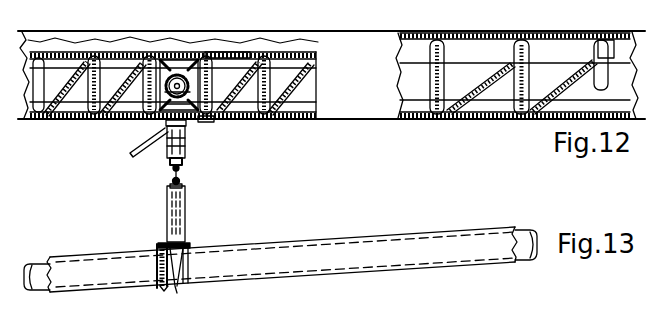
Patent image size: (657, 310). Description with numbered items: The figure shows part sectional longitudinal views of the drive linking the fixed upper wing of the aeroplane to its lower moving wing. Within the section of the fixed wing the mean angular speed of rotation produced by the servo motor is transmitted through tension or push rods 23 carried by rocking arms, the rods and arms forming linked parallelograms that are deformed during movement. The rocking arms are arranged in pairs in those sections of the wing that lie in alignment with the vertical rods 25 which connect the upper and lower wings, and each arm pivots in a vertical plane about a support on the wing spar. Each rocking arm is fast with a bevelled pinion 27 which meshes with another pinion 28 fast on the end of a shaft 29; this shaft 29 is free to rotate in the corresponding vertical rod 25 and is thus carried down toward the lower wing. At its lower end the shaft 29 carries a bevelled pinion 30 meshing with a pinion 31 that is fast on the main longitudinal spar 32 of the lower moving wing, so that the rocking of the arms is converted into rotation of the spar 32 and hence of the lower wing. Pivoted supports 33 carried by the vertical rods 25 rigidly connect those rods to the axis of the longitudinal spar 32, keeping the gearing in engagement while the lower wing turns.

In FIG. 12, the tension or push rod 23 is at (60, 63).
In FIG. 12, the vertical rod 25 is at (188, 149).
In FIG. 13, the vertical rod 25 is at (182, 211).
In FIG. 12, the bevelled pinion 27 is at (221, 52).
In FIG. 12, the pinion 28 is at (206, 116).
In FIG. 13, the shaft 29 is at (180, 168).
In FIG. 13, the bevelled pinion 30 is at (180, 249).
In FIG. 13, the pinion 31 is at (157, 265).
In FIG. 13, the main longitudinal spar 32 is at (117, 265).
In FIG. 13, the pivoted support 33 is at (182, 261).